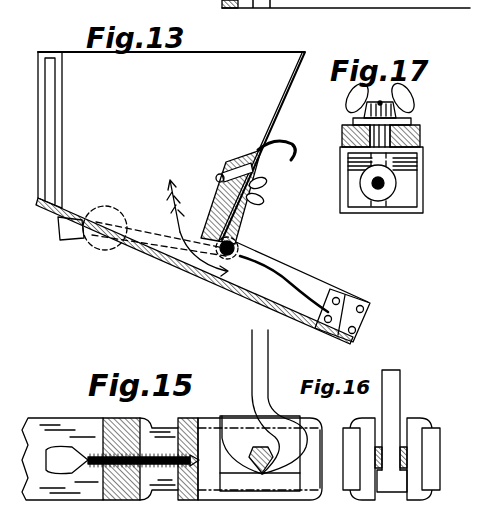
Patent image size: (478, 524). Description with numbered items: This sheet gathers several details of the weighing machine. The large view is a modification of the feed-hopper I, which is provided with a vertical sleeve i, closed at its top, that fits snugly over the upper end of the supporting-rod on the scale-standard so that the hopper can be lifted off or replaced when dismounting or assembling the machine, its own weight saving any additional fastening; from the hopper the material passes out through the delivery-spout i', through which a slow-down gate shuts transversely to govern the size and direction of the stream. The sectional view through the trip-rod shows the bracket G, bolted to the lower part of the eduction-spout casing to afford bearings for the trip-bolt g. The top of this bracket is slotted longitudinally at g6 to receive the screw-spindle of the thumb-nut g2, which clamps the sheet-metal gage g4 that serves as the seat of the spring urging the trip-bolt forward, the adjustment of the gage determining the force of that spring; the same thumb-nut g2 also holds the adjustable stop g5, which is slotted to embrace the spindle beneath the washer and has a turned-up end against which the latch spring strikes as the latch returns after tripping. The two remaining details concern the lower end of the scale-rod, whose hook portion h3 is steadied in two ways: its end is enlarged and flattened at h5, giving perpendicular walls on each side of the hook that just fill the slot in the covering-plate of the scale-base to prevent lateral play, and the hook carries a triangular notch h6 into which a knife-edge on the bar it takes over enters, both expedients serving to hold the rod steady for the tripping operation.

In FIG. 13, the feed-hopper I is at (171, 146).
In FIG. 13, the vertical sleeve i is at (50, 130).
In FIG. 13, the delivery-spout i' is at (303, 292).
In FIG. 17, the bracket G is at (423, 138).
In FIG. 17, the trip-bolt g is at (378, 190).
In FIG. 17, the thumb-nut g2 is at (406, 109).
In FIG. 17, the gage g4 is at (392, 186).
In FIG. 17, the adjustable stop g5 is at (412, 122).
In FIG. 17, the slot g6 is at (347, 128).
In FIG. 15, the hook arm h3 is at (279, 402).
In FIG. 16, the hook arm h3 is at (403, 420).
In FIG. 15, the enlarged flattened end of scale-rod h5 is at (272, 459).
In FIG. 16, the enlarged flattened end of scale-rod h5 is at (392, 481).
In FIG. 15, the triangular notch h6 is at (260, 474).